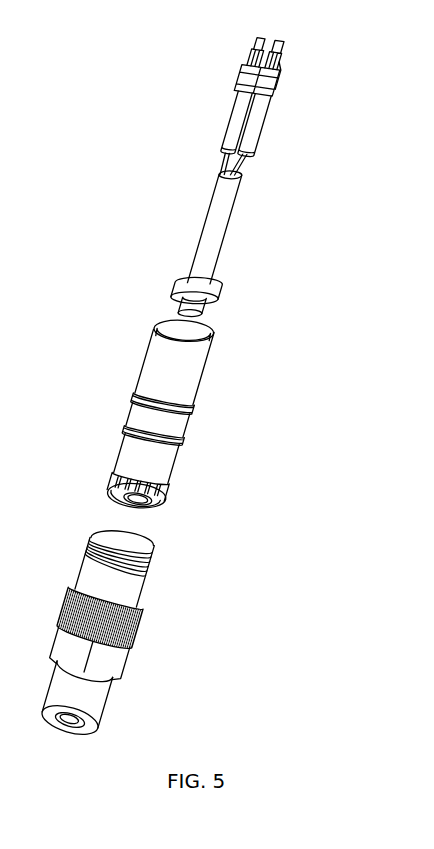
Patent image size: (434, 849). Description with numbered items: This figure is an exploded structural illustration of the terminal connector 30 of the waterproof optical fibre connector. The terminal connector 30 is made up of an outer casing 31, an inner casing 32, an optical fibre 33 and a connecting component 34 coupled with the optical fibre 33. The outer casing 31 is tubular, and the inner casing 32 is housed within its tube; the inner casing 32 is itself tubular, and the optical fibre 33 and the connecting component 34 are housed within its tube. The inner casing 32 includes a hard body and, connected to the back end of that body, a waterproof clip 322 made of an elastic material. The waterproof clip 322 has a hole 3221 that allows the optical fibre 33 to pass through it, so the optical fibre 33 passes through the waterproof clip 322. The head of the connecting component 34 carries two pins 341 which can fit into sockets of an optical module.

The terminal connector 30 is at (188, 385).
The outer casing 31 is at (135, 590).
The inner casing 32 is at (150, 413).
The waterproof clip 322 is at (137, 493).
The hole 3221 is at (137, 499).
The optical fibre 33 is at (217, 228).
The connecting component 34 is at (275, 92).
The pins 341 is at (269, 45).